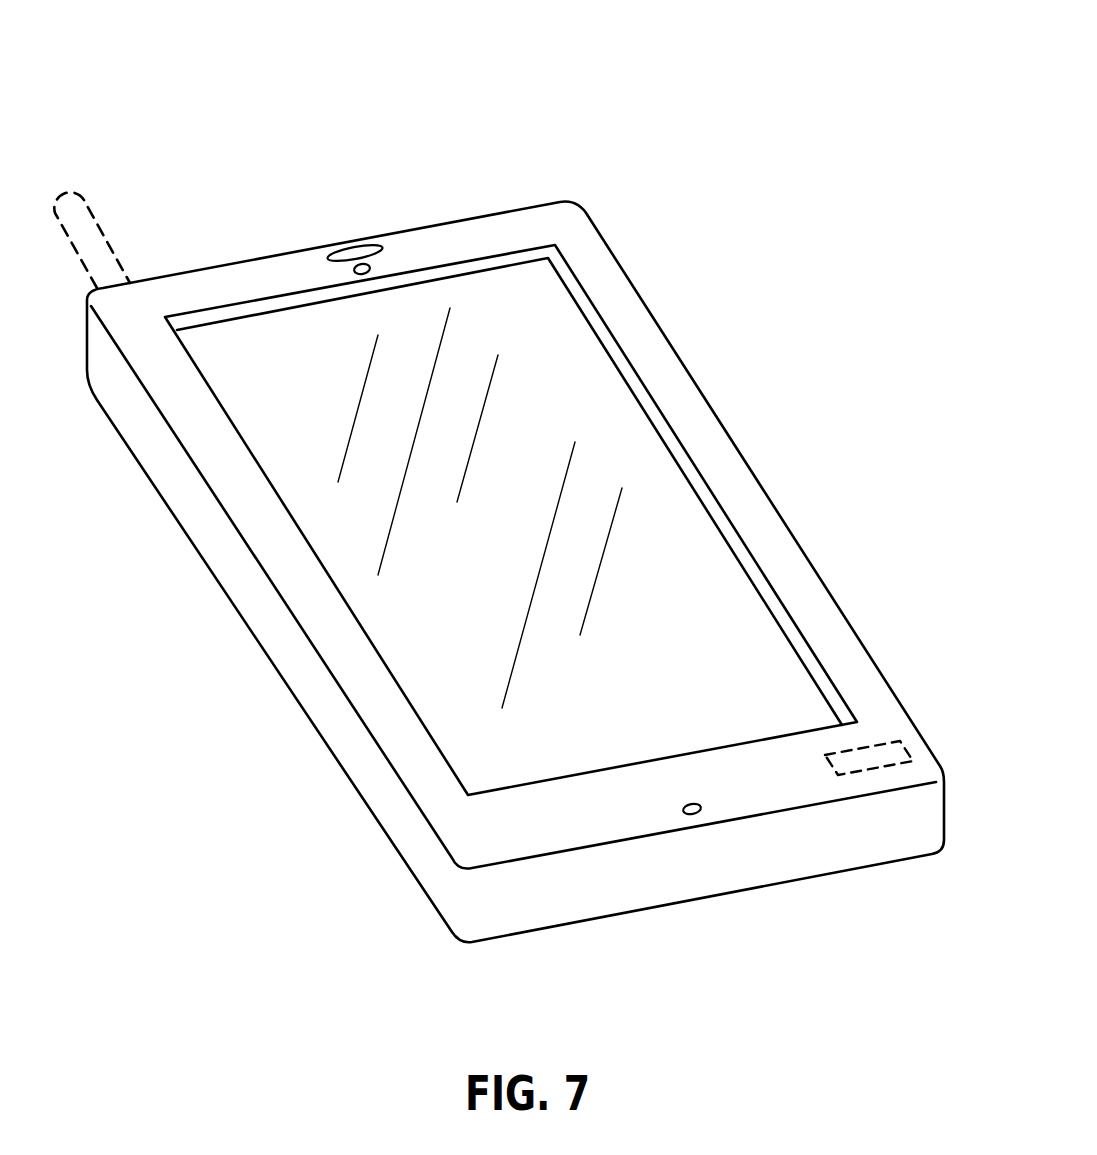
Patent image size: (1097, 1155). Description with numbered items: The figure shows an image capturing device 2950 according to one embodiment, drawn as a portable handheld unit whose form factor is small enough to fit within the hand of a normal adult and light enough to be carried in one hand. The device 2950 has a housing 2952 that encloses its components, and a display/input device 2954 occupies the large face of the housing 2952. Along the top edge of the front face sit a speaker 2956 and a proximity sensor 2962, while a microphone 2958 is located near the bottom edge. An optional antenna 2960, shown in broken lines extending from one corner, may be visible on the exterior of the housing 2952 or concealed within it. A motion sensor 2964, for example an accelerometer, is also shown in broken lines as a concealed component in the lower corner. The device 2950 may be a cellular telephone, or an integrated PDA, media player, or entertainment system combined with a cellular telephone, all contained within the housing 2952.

The image capturing device 2950 is at (694, 100).
The housing 2952 is at (654, 318).
The display/input device 2954 is at (528, 480).
The speaker 2956 is at (357, 251).
The microphone 2958 is at (690, 814).
The antenna 2960 is at (68, 208).
The proximity sensor 2962 is at (372, 268).
The motion sensor 2964 is at (873, 761).